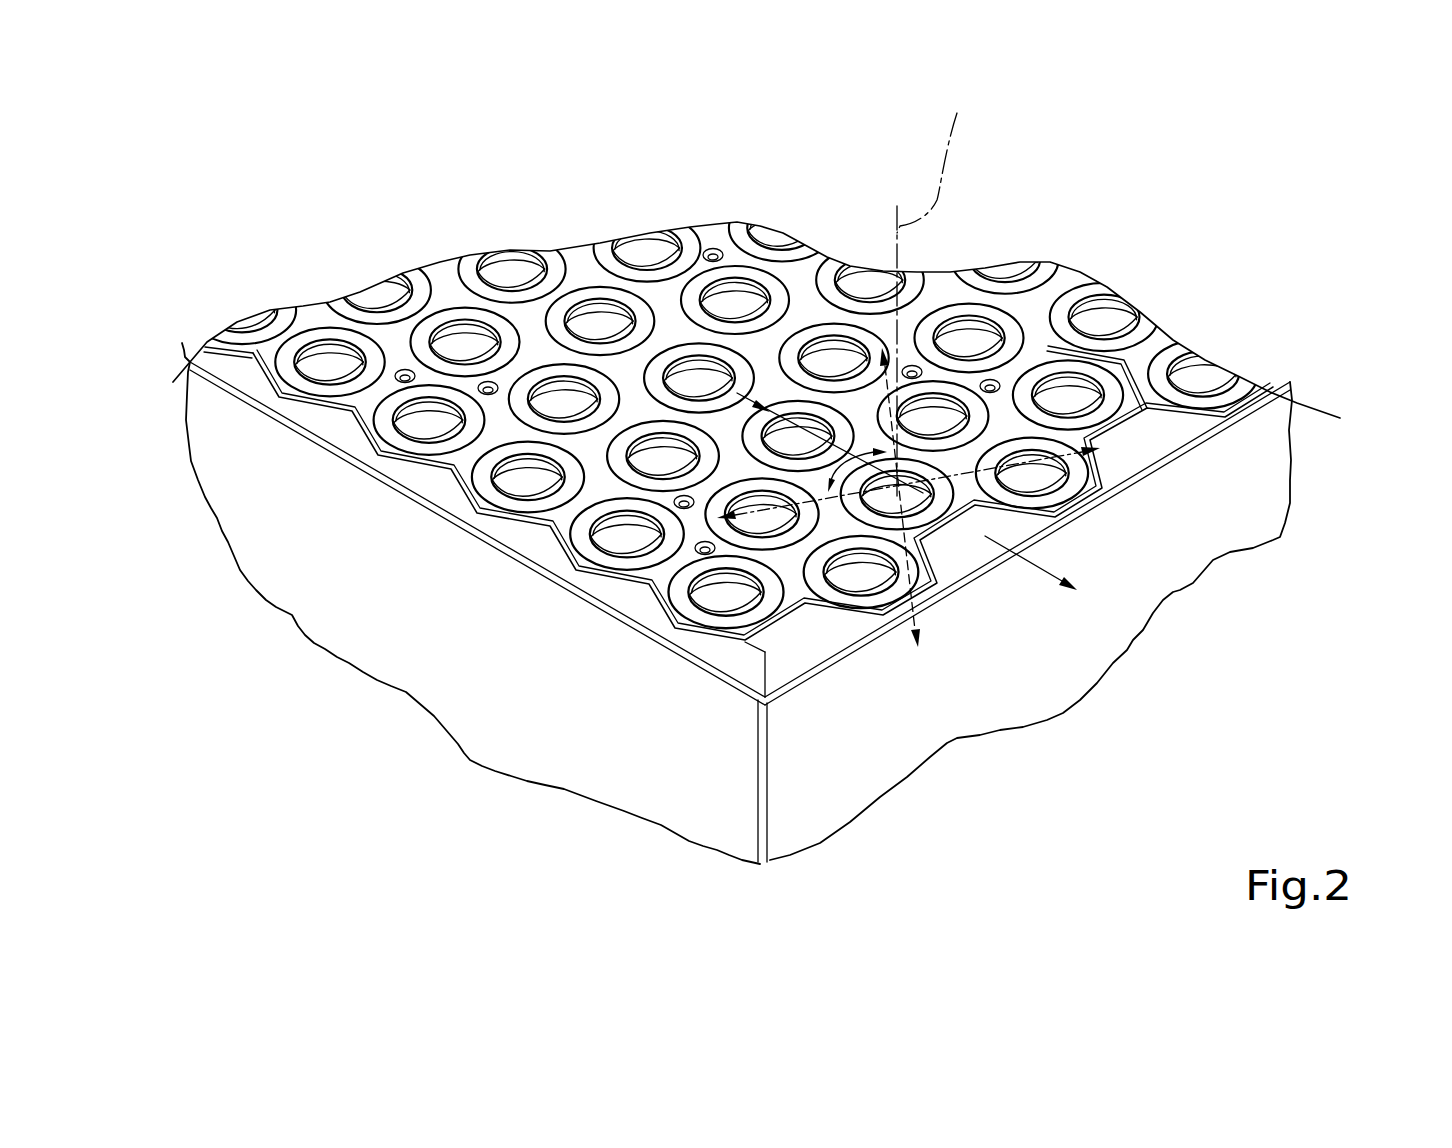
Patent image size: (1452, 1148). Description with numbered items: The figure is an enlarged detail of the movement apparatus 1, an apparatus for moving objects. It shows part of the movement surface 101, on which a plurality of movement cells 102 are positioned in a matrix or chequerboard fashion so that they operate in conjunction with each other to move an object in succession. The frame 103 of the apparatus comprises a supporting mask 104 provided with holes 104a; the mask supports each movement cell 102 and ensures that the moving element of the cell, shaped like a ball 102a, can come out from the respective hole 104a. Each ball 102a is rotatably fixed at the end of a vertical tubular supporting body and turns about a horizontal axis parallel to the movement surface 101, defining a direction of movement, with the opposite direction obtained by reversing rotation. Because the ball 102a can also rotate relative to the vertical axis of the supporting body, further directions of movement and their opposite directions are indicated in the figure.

The movement apparatus 1 is at (785, 498).
The movement surface 101 is at (369, 332).
The movement cell 102 is at (463, 316).
The ball 102a is at (1190, 366).
The frame 103 is at (392, 597).
The supporting mask 104 is at (1074, 262).
The hole 104a is at (595, 300).